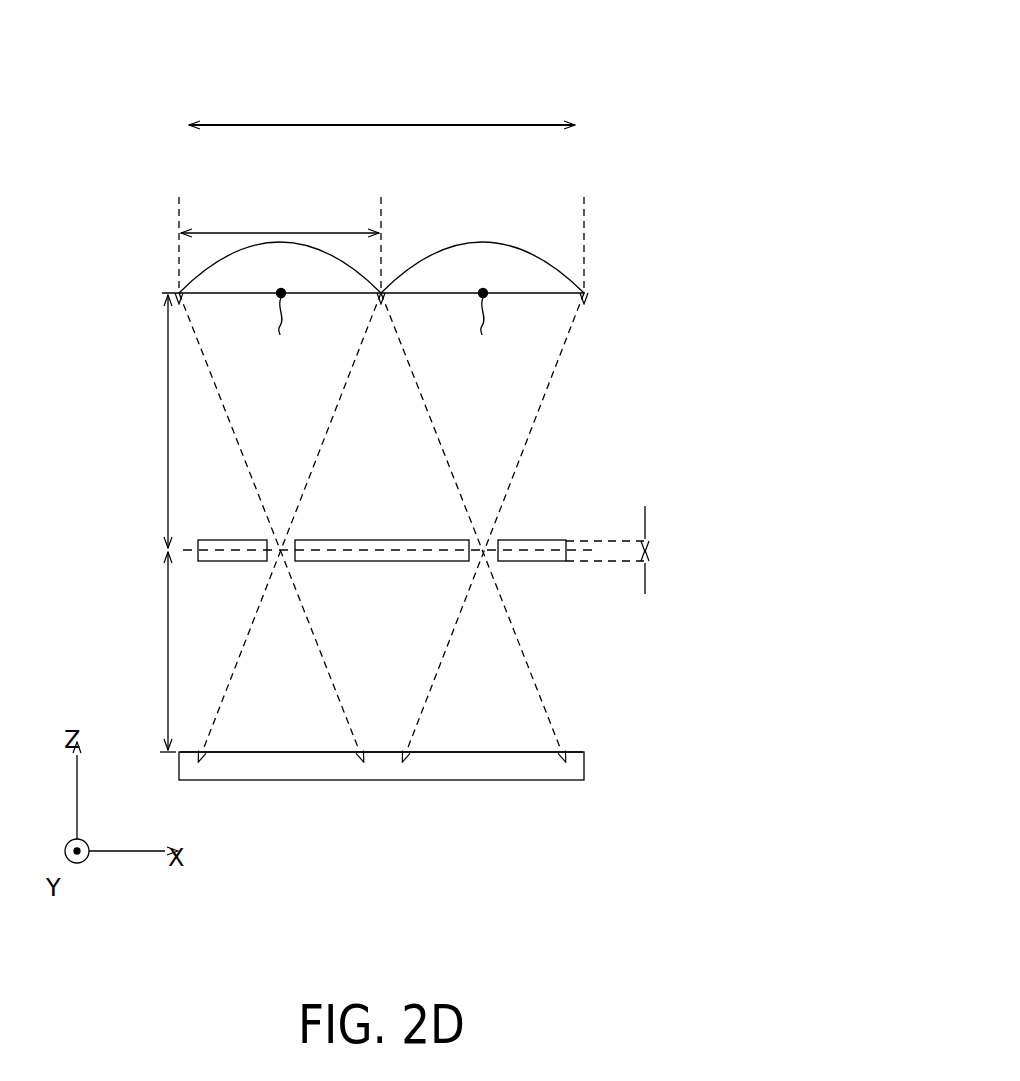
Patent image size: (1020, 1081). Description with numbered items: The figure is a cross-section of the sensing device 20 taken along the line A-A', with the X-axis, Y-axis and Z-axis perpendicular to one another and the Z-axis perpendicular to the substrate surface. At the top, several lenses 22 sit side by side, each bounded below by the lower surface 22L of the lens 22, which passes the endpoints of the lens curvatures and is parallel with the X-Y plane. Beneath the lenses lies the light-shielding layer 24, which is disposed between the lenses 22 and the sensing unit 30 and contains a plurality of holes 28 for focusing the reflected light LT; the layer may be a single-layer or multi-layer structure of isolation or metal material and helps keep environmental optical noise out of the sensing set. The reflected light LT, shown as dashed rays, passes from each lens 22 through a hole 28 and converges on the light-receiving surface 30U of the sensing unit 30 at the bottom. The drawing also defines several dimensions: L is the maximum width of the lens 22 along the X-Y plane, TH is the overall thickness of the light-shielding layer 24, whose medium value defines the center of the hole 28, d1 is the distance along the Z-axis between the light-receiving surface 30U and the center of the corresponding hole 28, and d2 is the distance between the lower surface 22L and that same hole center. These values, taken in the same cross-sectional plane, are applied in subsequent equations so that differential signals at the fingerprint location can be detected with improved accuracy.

The sensing device 20 is at (550, 88).
The lens 22 is at (295, 283).
The lower surface of the lens 22L is at (557, 294).
The light-shielding layer 24 is at (553, 556).
The hole 28 is at (494, 535).
The sensing unit 30 is at (572, 765).
The light-receiving surface of the sensing unit 30U is at (573, 752).
The reflected light LT is at (443, 452).
The maximum width of the lens L is at (280, 220).
The distance between the sensing unit and the hole d1 is at (155, 652).
The distance between the lower surface of the lens and the hole d2 is at (150, 421).
The overall thickness of the light-shielding layer TH is at (629, 550).